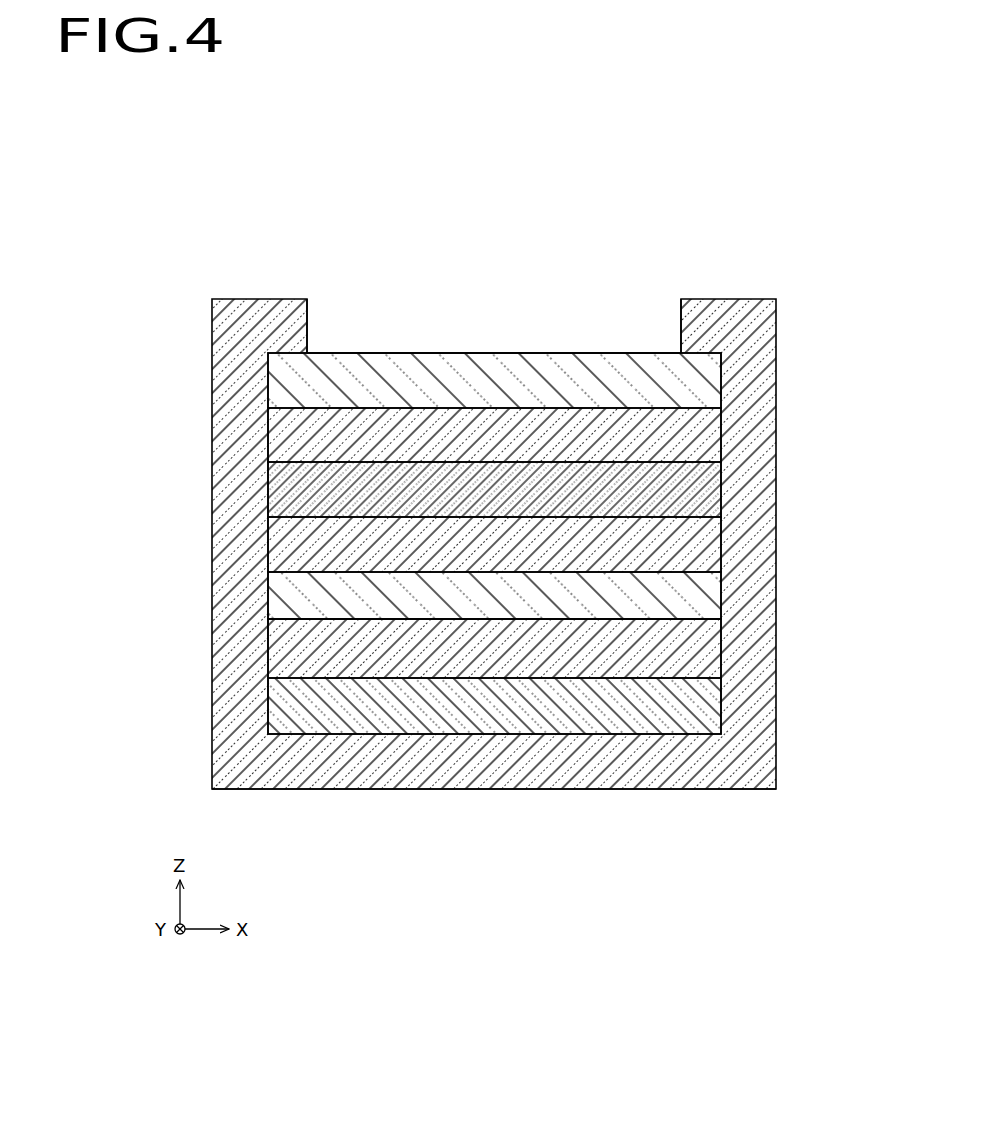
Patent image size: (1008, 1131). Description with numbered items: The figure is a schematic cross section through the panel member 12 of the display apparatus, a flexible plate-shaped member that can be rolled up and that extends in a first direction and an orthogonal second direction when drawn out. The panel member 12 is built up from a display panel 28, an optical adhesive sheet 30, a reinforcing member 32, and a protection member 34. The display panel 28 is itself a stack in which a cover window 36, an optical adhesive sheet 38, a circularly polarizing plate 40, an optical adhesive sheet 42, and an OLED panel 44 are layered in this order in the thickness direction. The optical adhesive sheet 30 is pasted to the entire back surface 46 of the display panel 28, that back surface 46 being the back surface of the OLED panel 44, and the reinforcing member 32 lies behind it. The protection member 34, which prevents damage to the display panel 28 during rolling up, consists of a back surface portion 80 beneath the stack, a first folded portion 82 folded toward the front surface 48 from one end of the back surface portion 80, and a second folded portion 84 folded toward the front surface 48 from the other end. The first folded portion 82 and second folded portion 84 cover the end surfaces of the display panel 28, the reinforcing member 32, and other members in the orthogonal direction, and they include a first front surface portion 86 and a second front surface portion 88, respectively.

The panel member 12 is at (246, 249).
The display panel 28 is at (162, 353).
The optical adhesive sheet 30 is at (290, 650).
The reinforcing member 32 is at (290, 705).
The protection member 34 is at (377, 798).
The cover window 36 is at (290, 386).
The optical adhesive sheet 38 is at (290, 437).
The circularly polarizing plate 40 is at (290, 490).
The optical adhesive sheet 42 is at (290, 547).
The organic light emitting diode (OLED) panel 44 is at (290, 597).
The back surface 46 is at (683, 621).
The front surface 48 is at (504, 353).
The back surface portion 80 is at (493, 770).
The first folded portion 82 is at (211, 325).
The second folded portion 84 is at (779, 322).
The first front surface portion 86 is at (283, 333).
The second front surface portion 88 is at (703, 330).